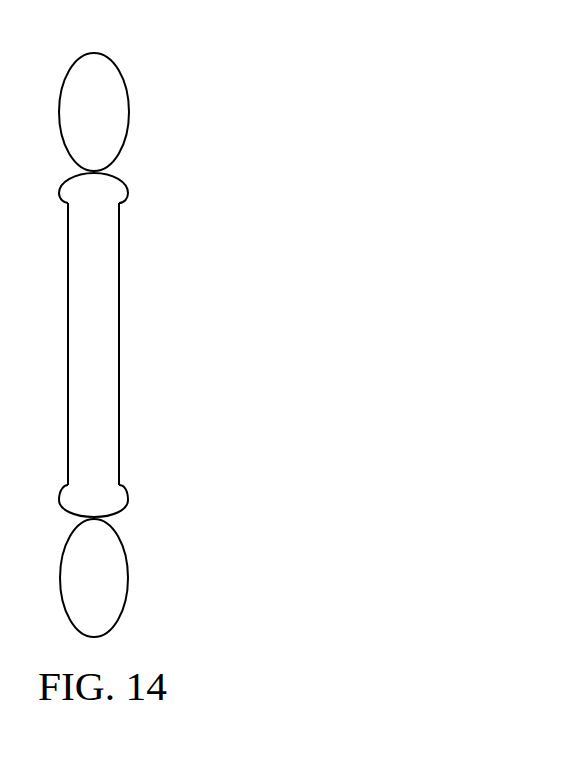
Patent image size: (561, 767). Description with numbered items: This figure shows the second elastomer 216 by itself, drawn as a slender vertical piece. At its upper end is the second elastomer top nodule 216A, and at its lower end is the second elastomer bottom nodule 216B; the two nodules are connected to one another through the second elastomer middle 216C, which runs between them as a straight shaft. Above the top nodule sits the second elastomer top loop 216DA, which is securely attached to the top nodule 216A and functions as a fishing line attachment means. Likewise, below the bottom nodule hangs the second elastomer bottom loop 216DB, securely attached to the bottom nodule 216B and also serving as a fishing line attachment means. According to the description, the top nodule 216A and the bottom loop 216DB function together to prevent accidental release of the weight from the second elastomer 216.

The second elastomer 216 is at (119, 42).
The second elastomer top loop 216DA is at (128, 106).
The second elastomer top nodule 216A is at (128, 193).
The second elastomer middle 216C is at (96, 337).
The second elastomer bottom nodule 216B is at (127, 505).
The second elastomer bottom loop 216DB is at (124, 606).